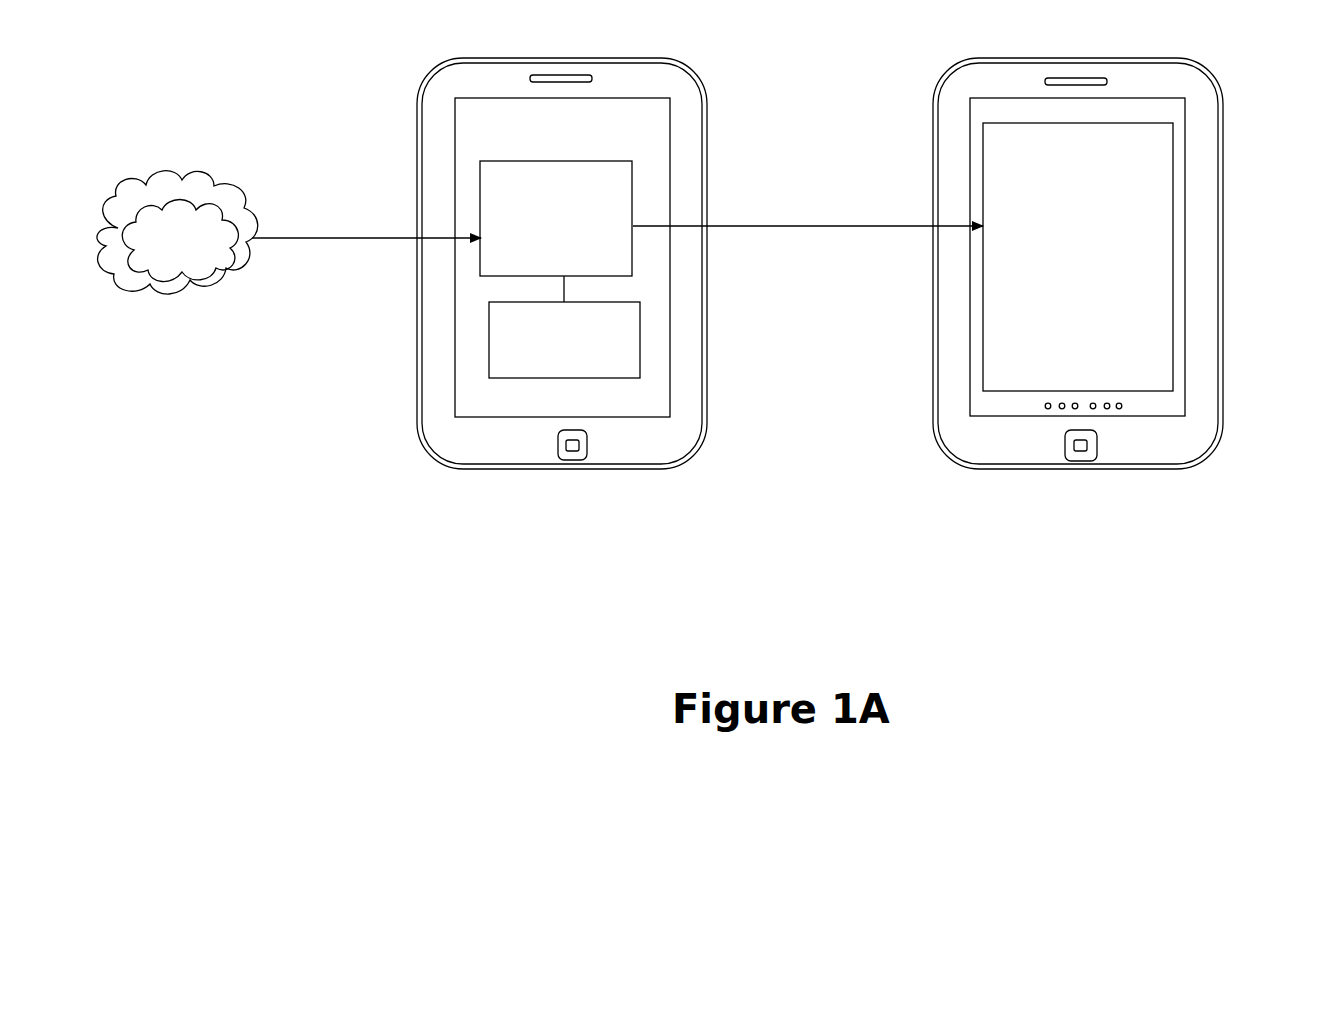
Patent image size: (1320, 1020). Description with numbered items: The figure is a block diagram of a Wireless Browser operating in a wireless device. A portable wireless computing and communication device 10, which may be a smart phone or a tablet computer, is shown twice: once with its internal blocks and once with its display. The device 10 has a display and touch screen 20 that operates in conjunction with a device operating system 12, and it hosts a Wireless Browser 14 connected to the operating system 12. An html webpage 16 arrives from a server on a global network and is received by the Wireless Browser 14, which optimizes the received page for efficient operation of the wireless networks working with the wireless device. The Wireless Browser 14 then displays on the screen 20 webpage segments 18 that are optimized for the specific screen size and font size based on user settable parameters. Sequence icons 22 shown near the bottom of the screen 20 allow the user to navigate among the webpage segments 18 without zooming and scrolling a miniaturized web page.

The portable wireless computing and communication device 10 is at (608, 239).
The device operating system 12 is at (564, 340).
The Wireless Browser 14 is at (556, 218).
The html webpage 16 is at (289, 232).
The webpage segments 18 is at (1078, 257).
The display and touch screen 20 is at (671, 148).
The sequence icons 22 is at (1130, 401).